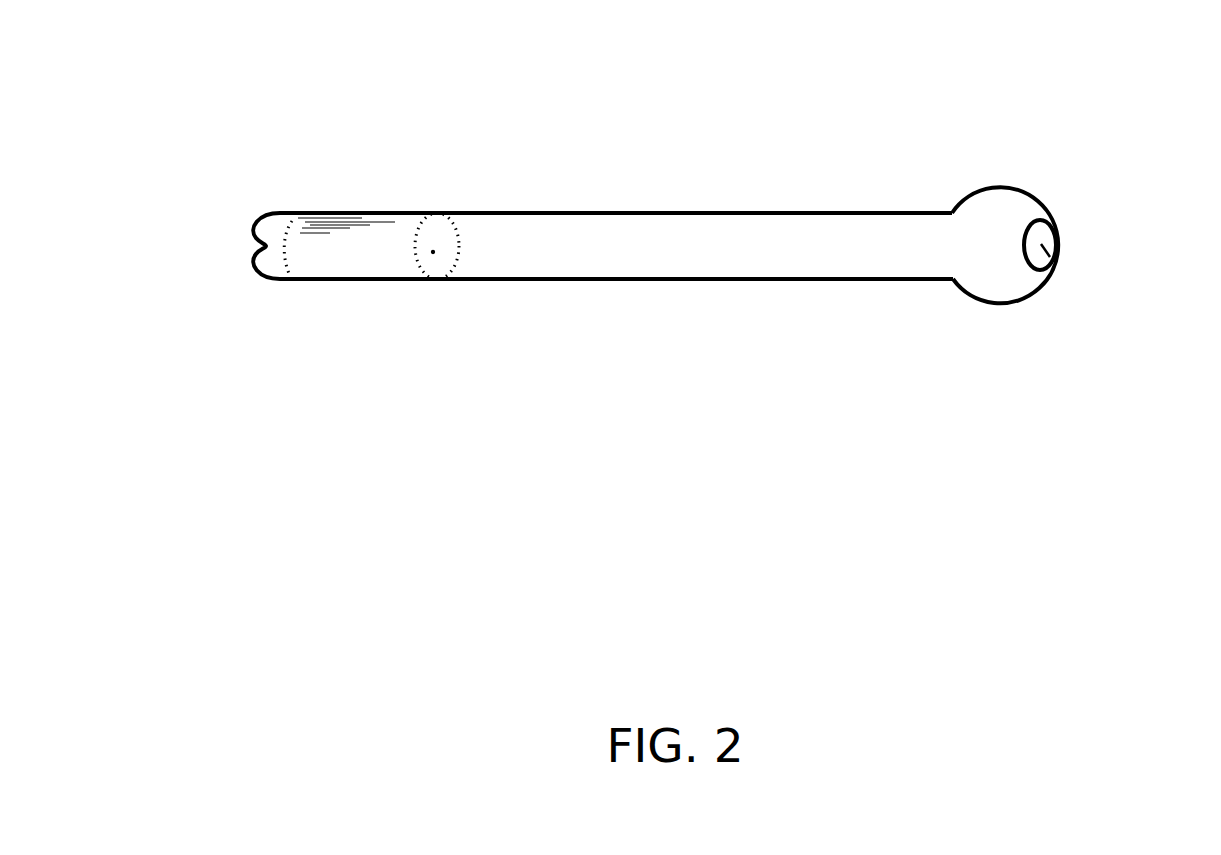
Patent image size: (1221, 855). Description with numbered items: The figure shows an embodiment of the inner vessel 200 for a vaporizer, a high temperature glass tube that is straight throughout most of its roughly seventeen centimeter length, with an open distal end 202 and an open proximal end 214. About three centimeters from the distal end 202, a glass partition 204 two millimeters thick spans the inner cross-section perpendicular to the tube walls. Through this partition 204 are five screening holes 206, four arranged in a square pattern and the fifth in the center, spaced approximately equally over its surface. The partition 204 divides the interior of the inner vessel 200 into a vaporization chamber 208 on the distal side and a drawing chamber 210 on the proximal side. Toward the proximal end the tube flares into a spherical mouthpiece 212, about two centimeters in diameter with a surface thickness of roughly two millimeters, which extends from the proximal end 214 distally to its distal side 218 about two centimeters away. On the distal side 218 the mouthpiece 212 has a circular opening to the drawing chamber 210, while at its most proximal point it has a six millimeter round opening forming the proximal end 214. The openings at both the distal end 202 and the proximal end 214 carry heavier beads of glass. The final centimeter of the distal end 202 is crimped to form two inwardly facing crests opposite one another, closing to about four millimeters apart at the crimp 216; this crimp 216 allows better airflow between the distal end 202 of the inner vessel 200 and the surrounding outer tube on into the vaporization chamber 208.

The inner vessel 200 is at (659, 254).
The distal end 202 is at (262, 272).
The glass partition 204 is at (417, 212).
The screening holes 206 is at (450, 212).
The vaporization chamber 208 is at (330, 245).
The drawing chamber 210 is at (658, 247).
The spherical mouthpiece 212 is at (1025, 188).
The proximal end 214 is at (1056, 254).
The crimp 216 is at (258, 253).
The distal side of mouthpiece 218 is at (951, 282).